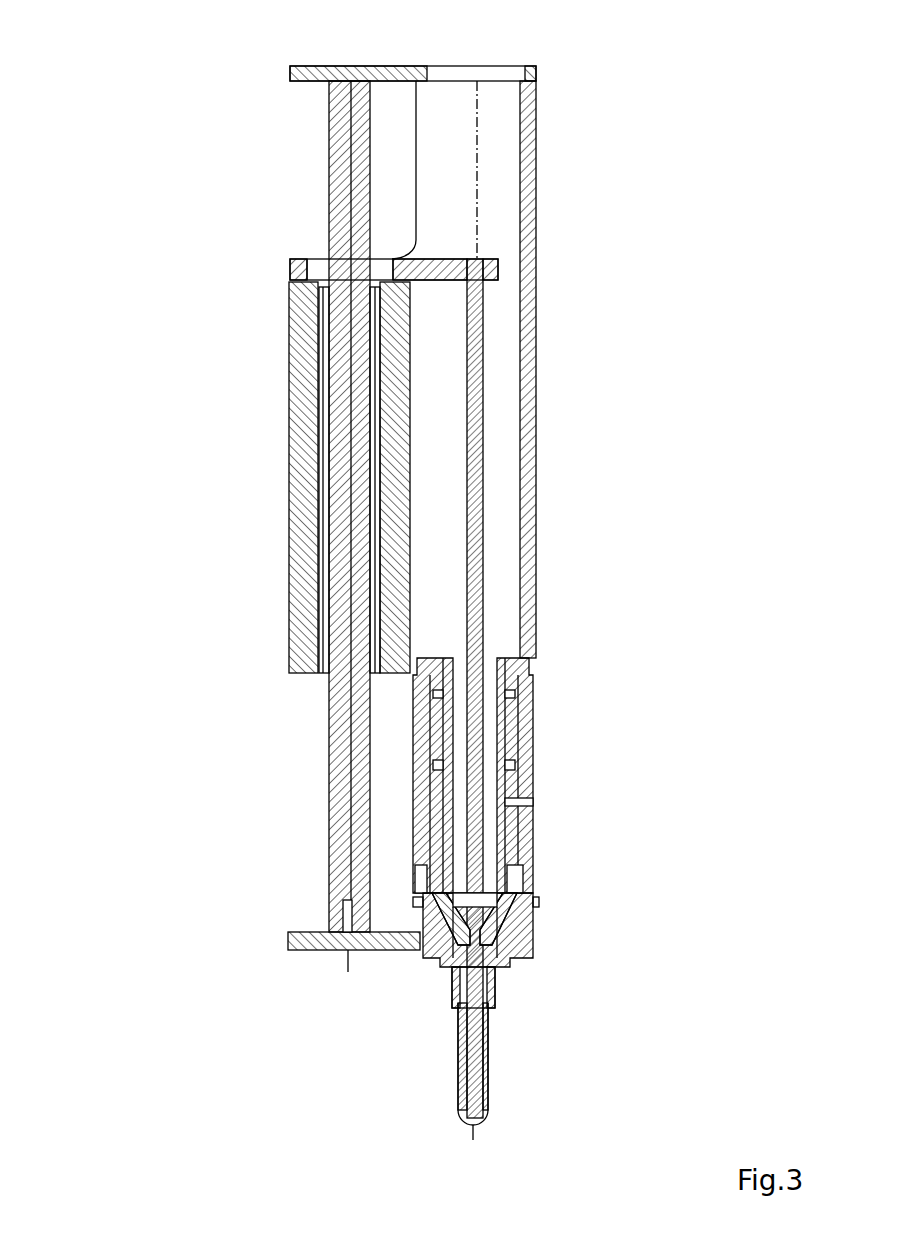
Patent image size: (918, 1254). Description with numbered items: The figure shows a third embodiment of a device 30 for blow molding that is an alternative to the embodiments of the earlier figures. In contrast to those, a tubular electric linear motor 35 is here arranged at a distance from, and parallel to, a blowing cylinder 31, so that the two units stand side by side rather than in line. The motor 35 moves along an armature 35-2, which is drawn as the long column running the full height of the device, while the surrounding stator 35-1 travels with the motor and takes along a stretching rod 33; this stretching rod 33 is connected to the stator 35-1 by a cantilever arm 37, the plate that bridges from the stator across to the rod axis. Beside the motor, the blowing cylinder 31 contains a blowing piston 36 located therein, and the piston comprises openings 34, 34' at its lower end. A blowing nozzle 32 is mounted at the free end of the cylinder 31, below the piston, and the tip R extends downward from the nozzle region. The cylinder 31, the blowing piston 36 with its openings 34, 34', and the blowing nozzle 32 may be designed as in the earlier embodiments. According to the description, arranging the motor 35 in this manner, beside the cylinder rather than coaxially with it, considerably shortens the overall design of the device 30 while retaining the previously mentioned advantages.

The device 30 is at (680, 96).
The blowing cylinder 31 is at (533, 683).
The blowing nozzle 32 is at (448, 970).
The piston rod 33 is at (483, 433).
The opening 34 is at (396, 912).
The opening 34' is at (586, 924).
The tubular electric linear motor 35 is at (158, 448).
The stator 35-1 is at (322, 322).
The armature 35-2 is at (341, 772).
The blowing piston 36 is at (507, 804).
The cantilever arm 37 is at (497, 273).
The pipette tube R is at (490, 1093).